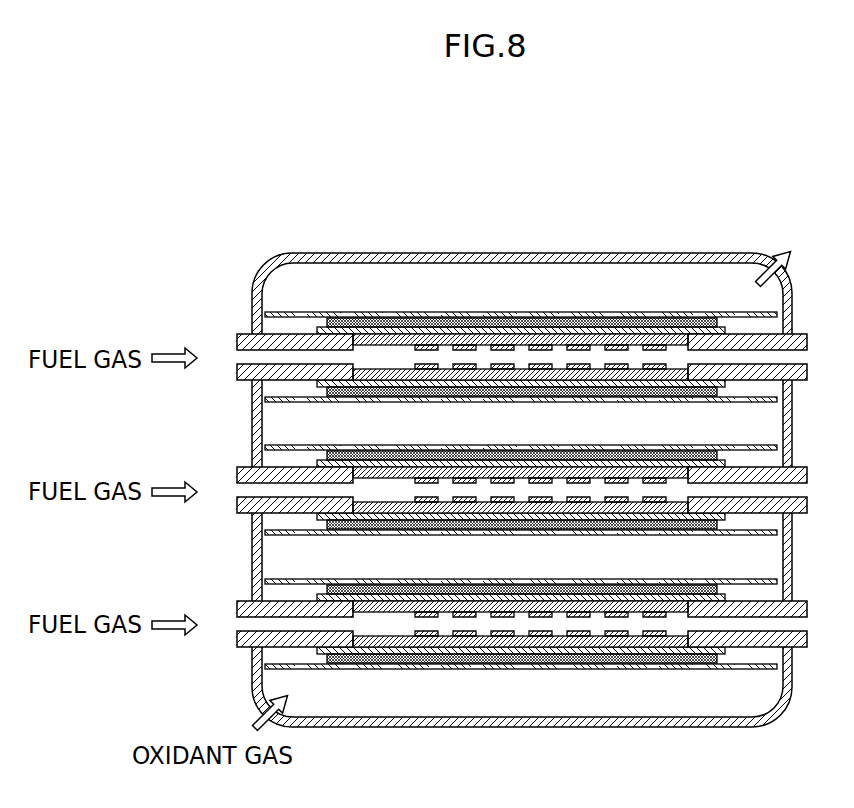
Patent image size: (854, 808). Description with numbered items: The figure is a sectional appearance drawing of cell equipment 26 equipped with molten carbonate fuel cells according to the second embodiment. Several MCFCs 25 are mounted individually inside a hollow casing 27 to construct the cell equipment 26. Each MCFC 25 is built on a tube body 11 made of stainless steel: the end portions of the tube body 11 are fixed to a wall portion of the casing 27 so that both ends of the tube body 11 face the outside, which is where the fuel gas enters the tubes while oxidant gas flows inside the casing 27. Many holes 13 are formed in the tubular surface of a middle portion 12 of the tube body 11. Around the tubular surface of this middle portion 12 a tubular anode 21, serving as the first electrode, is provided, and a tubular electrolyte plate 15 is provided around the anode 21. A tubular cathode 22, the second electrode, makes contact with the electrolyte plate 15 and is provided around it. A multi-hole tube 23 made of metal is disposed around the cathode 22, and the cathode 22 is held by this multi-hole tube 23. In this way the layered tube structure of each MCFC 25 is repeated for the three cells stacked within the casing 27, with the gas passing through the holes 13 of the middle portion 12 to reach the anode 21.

The tube body 11 is at (280, 336).
The middle portion 12 is at (506, 330).
The holes 13 is at (483, 347).
The electrolyte plate 15 is at (632, 336).
The anode 21 is at (597, 328).
The cathode 22 is at (532, 312).
The multi-hole tube 23 is at (395, 312).
The MCFC 25 is at (560, 300).
The cell equipment 26 is at (682, 237).
The casing 27 is at (498, 253).